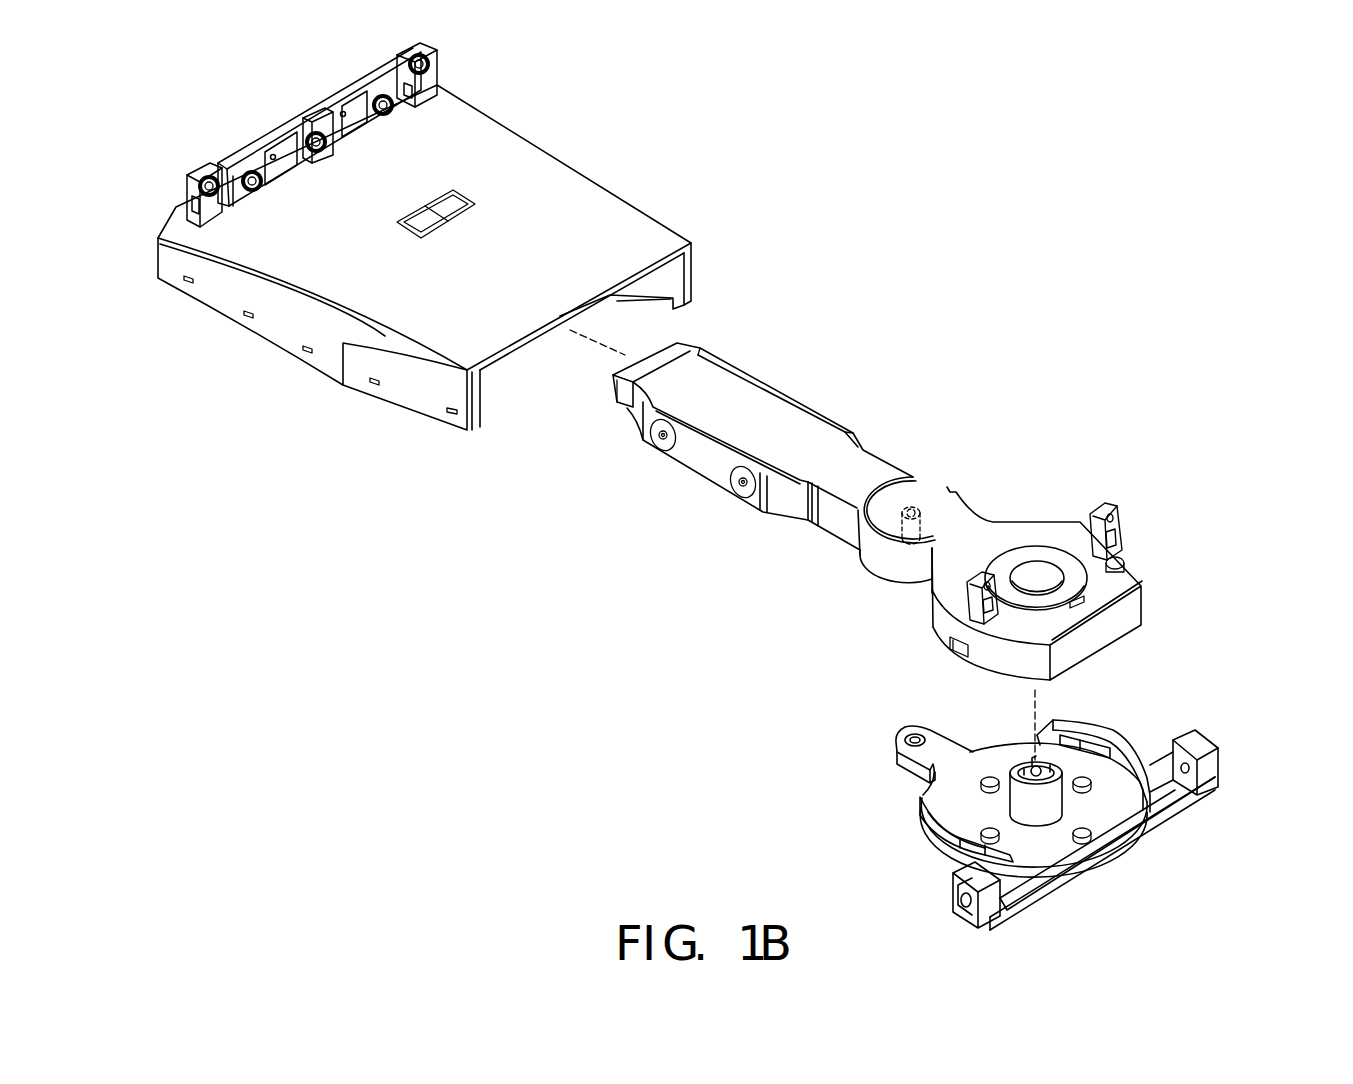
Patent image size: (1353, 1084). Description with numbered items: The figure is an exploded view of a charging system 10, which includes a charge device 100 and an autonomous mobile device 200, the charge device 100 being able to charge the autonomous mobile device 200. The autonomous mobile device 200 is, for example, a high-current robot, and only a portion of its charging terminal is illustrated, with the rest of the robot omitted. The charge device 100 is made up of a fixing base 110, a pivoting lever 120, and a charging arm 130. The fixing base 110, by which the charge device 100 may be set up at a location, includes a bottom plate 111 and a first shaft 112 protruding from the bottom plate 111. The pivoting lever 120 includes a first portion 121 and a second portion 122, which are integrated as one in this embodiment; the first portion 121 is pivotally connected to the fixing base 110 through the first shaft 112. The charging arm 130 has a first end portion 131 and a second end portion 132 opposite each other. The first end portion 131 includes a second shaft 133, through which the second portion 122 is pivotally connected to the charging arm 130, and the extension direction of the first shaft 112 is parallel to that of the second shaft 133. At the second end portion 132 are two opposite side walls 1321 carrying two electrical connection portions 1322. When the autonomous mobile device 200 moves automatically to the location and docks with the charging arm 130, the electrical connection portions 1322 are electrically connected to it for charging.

The charging system 10 is at (157, 845).
The charge device 100 is at (1207, 373).
The fixing base 110 is at (930, 852).
The bottom plate 111 is at (1117, 817).
The first shaft 112 is at (1043, 815).
The pivoting lever 120 is at (1017, 530).
The first portion 121 is at (1148, 538).
The second portion 122 is at (968, 482).
The charging arm 130 is at (708, 375).
The first end portion 131 is at (837, 555).
The second end portion 132 is at (623, 443).
The side walls 1321 is at (837, 520).
The electrical connection portions 1322 is at (802, 395).
The second shaft 133 is at (912, 505).
The autonomous mobile device 200 is at (660, 140).